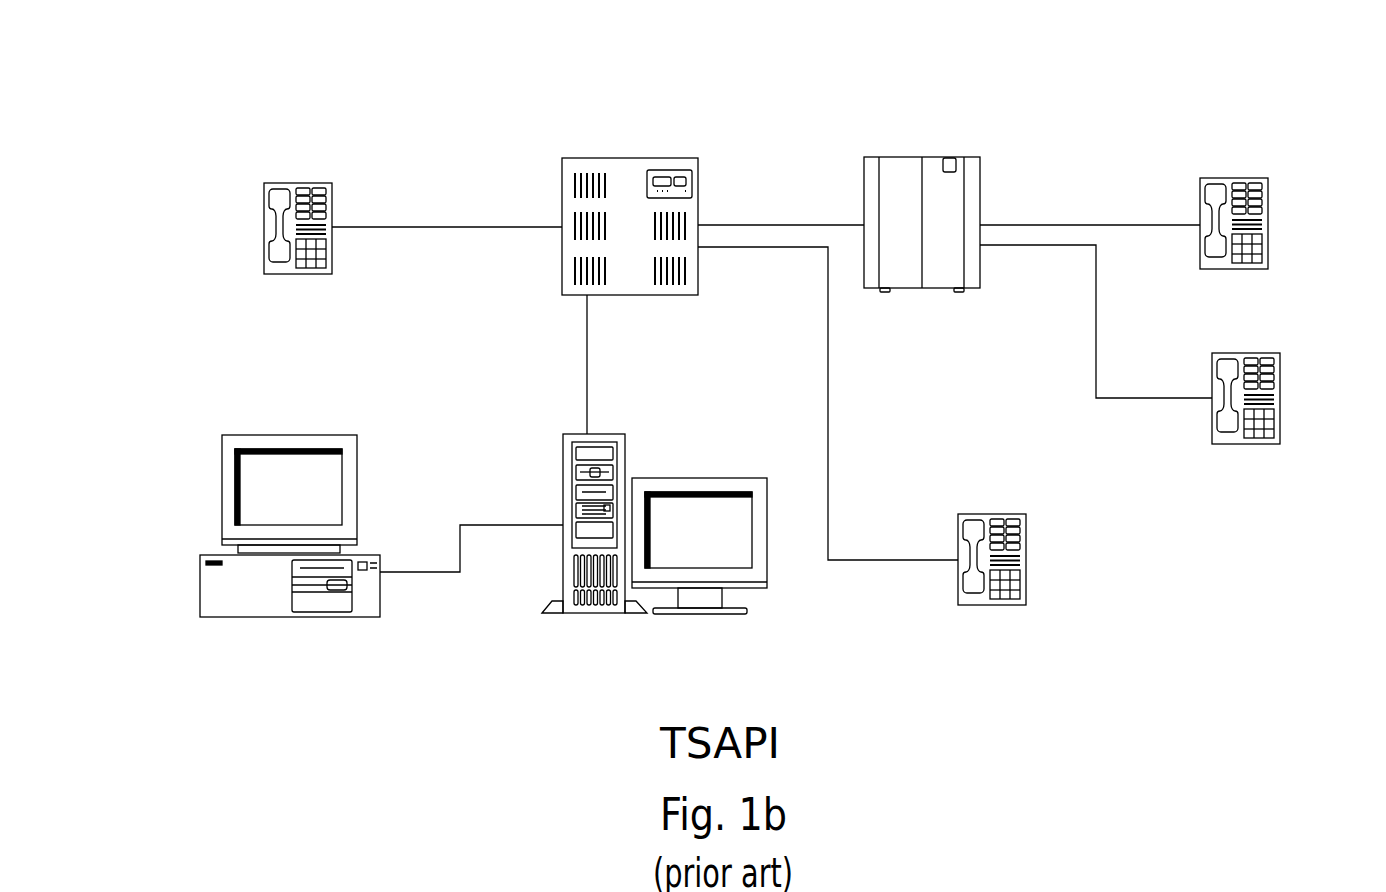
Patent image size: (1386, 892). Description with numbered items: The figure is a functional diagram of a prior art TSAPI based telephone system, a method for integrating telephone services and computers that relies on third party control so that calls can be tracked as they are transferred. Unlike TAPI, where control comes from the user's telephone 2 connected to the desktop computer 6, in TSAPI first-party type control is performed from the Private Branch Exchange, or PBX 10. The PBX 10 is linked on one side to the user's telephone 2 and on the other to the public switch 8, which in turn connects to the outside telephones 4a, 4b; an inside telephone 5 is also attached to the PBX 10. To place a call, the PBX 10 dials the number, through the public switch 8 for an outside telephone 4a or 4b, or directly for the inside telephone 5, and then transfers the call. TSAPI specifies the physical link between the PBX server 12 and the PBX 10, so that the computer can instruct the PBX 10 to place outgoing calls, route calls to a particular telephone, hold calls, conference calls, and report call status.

The user's telephone 2 is at (298, 182).
The Private Branch Exchange (PBX) 10 is at (630, 158).
The public switch 8 is at (923, 157).
The outside telephone 4a is at (1237, 178).
The outside telephone 4b is at (1282, 400).
The inside telephone 5 is at (1030, 560).
The desktop computer 6 is at (200, 572).
The PBX server 12 is at (588, 617).